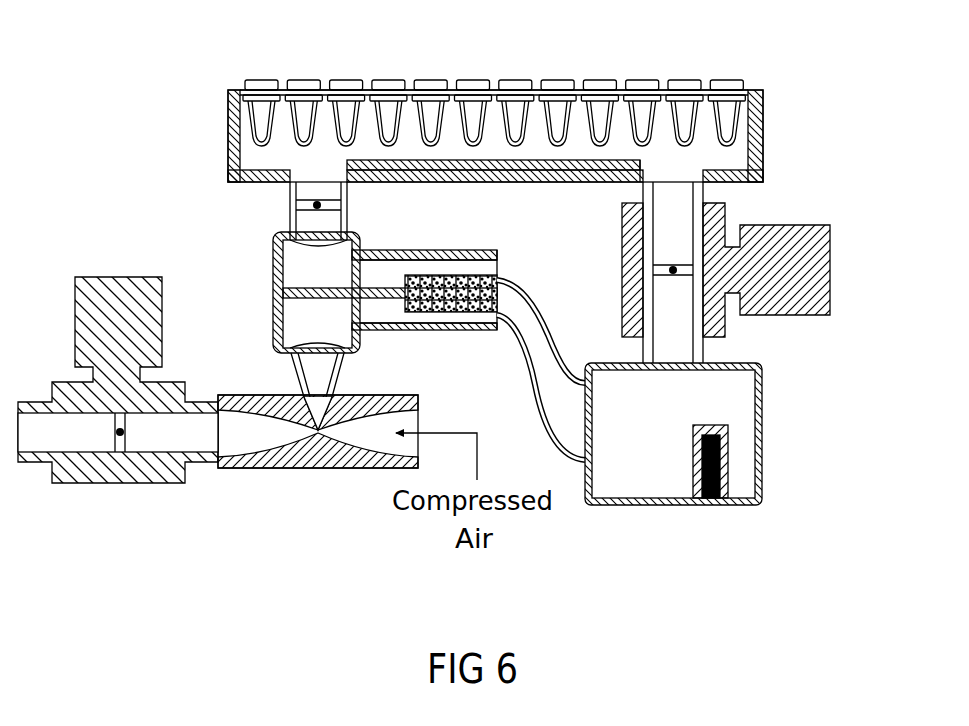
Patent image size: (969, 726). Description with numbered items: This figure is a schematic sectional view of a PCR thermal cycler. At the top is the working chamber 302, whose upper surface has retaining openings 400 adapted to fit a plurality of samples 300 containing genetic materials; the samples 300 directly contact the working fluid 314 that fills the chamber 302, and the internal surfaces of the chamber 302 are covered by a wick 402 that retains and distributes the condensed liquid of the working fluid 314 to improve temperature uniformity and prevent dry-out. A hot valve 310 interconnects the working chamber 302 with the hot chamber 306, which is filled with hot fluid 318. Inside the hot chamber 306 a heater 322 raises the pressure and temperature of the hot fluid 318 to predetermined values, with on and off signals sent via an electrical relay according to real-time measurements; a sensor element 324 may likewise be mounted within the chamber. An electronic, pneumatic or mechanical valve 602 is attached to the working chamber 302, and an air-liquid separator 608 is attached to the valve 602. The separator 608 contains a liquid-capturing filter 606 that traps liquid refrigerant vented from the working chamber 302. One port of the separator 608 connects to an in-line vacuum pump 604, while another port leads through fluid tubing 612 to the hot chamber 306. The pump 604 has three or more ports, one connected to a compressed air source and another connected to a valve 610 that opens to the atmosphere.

The analyte samples 300 is at (261, 96).
The working chamber 302 is at (759, 92).
The hot chamber 306 is at (763, 420).
The hot valve 310 is at (778, 235).
The working fluid 314 is at (498, 136).
The hot fluid 318 is at (648, 431).
The heater 322 is at (703, 500).
The sensor tube 324 is at (728, 444).
The openings 400 is at (348, 92).
The wick 402 is at (628, 166).
The valve 602 is at (290, 198).
The vacuum pump 604 is at (323, 460).
The filter 606 is at (442, 275).
The air-liquid separator 608 is at (273, 262).
The valve 610 is at (128, 280).
The fluid tubing 612 is at (553, 331).